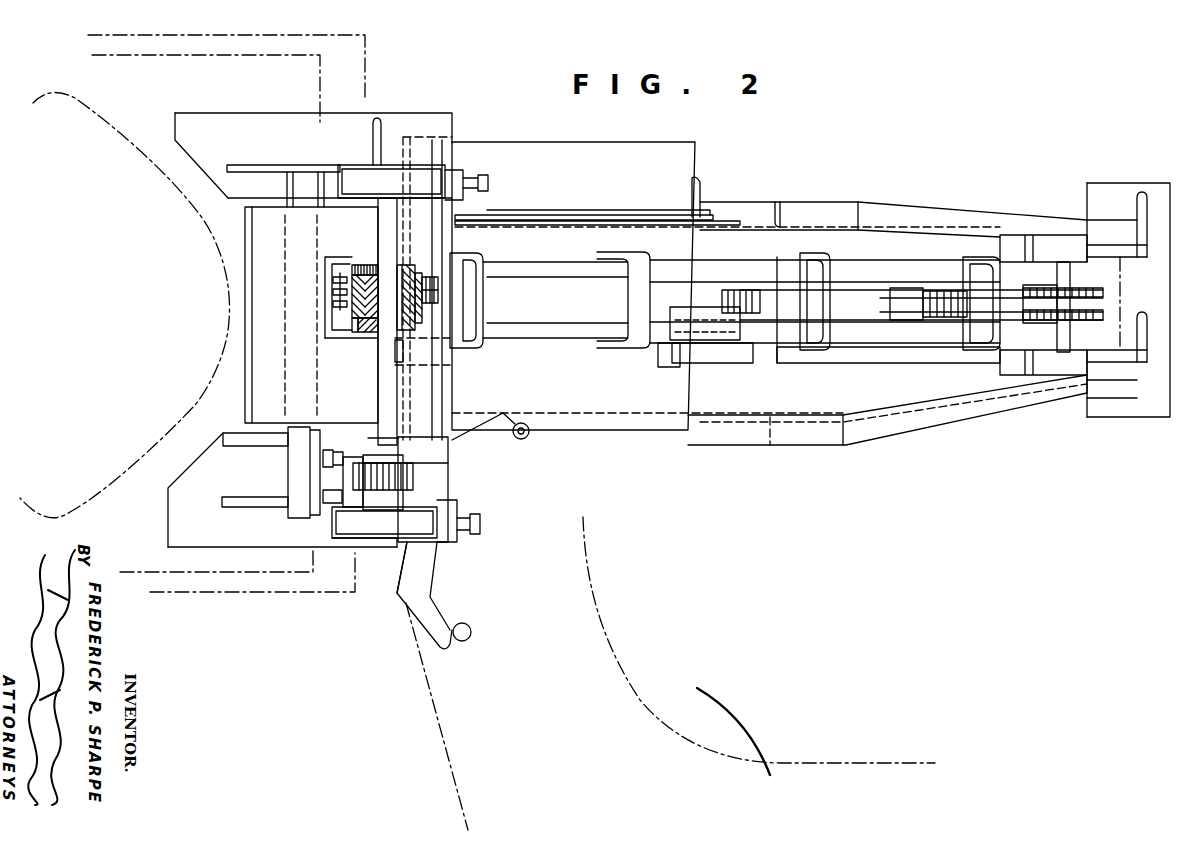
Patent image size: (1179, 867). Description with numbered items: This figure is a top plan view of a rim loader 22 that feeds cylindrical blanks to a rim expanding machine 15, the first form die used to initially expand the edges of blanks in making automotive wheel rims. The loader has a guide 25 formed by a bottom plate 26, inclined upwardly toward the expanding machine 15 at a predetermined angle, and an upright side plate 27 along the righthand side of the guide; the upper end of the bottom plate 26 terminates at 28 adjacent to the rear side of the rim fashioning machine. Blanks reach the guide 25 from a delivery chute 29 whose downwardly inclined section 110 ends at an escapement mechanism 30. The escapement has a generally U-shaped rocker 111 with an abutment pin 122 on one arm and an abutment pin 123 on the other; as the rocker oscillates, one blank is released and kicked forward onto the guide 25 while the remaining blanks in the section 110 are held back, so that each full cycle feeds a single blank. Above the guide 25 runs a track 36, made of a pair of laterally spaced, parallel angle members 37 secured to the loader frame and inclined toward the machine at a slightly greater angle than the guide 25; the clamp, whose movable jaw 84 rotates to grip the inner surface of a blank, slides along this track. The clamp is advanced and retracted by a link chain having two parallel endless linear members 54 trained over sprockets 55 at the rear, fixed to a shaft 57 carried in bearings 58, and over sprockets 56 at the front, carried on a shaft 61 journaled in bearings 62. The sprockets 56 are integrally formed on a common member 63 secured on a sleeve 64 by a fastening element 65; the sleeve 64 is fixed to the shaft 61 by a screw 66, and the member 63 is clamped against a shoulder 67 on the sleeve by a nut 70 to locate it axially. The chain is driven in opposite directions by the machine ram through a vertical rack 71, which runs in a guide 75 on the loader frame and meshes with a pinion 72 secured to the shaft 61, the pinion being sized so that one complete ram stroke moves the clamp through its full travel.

The rim expanding machine 15 is at (137, 469).
The rim loader 22 is at (797, 200).
The guide 25 is at (697, 402).
The bottom plate 26 is at (682, 435).
The upright side plate 27 is at (627, 208).
The upper end of the bottom plate 28 is at (250, 274).
The delivery chute 29 is at (598, 628).
The escapement mechanism 30 is at (398, 603).
The track 36 is at (905, 352).
The angle members 37 is at (912, 271).
The endless linear members 54 is at (1103, 316).
The sprockets 55 is at (1037, 307).
The sprockets 56 is at (437, 285).
The shaft 57 is at (1073, 252).
The bearings 58 is at (1075, 245).
The shaft 61 is at (385, 412).
The bearings 62 is at (353, 176).
The common member 63 is at (355, 314).
The sleeve 64 is at (373, 333).
The fastening element 65 is at (413, 265).
The screw 66 is at (368, 264).
The shoulder 67 is at (348, 266).
The nut 70 is at (364, 334).
The vertical rack 71 is at (351, 482).
The pinion 72 is at (410, 483).
The guide 75 is at (323, 497).
The movable jaw 84 is at (689, 307).
The downwardly inclined section 110 is at (712, 722).
The rocker 111 is at (427, 575).
The abutment pin 122 is at (524, 440).
The abutment pin 123 is at (469, 639).